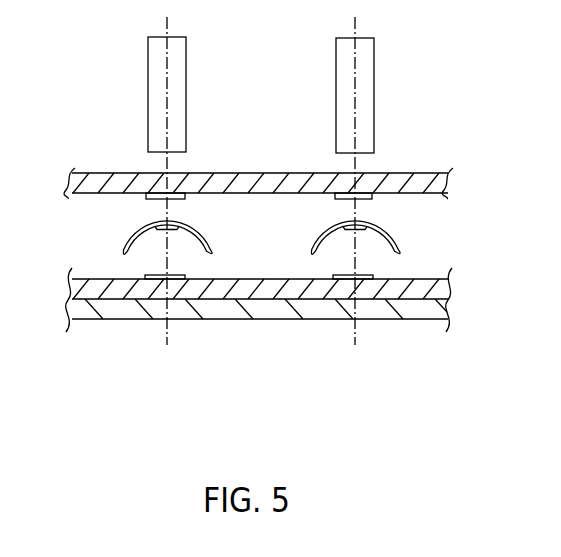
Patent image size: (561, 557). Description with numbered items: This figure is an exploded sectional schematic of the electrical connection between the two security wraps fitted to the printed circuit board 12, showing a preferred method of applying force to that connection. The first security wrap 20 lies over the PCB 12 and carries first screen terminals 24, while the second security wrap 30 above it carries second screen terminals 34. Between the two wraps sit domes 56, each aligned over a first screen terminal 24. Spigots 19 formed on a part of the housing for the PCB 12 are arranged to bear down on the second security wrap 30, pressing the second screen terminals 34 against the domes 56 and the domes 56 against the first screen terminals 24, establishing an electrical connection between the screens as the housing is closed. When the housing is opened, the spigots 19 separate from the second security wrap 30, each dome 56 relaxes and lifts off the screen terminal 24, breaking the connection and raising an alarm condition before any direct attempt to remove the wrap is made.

The spigots 19 is at (148, 73).
The second security wrap 30 is at (417, 171).
The second screen terminals 34 is at (372, 200).
The dome 56 is at (140, 231).
The first screen terminals 24 is at (373, 275).
The first security wrap 20 is at (110, 278).
The printed circuit board 12 is at (388, 319).